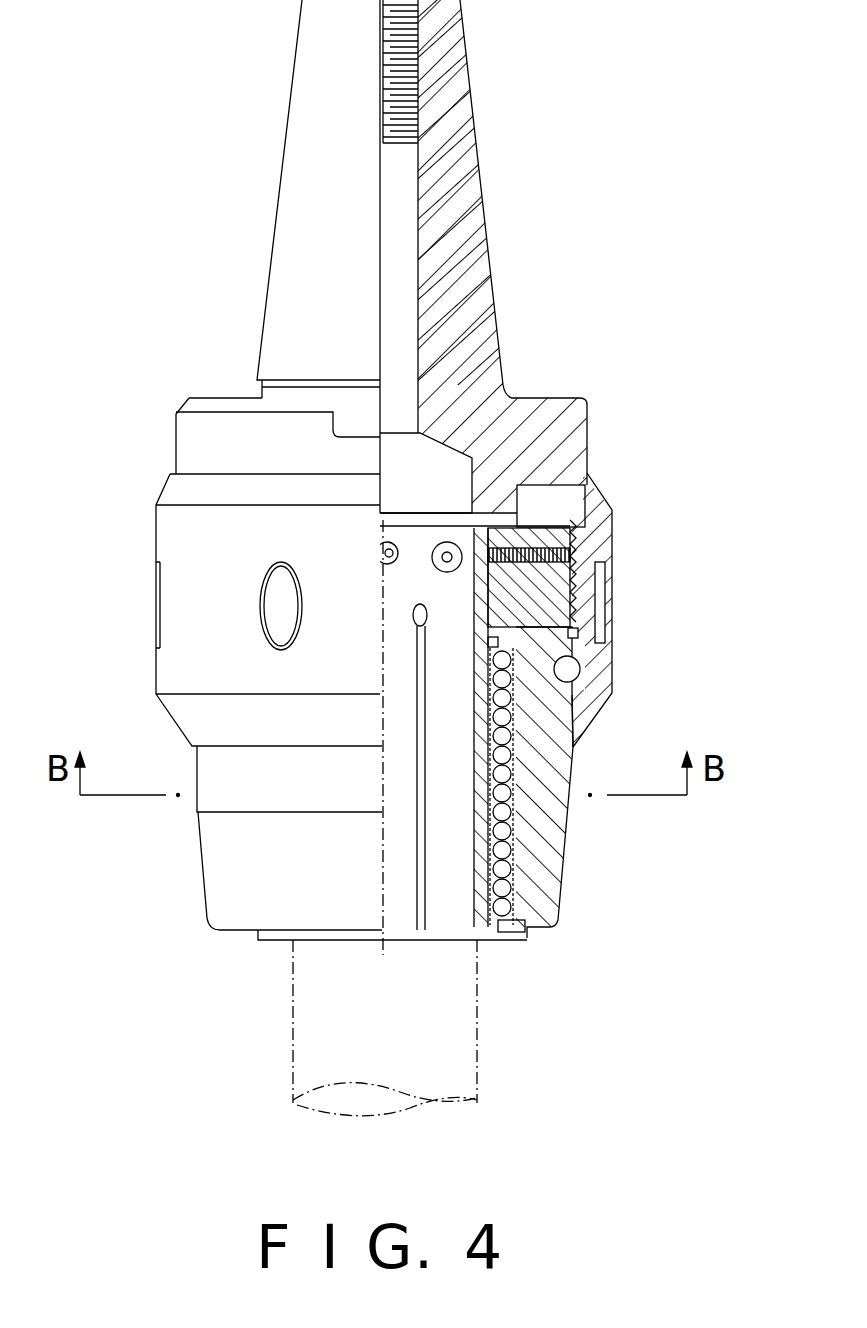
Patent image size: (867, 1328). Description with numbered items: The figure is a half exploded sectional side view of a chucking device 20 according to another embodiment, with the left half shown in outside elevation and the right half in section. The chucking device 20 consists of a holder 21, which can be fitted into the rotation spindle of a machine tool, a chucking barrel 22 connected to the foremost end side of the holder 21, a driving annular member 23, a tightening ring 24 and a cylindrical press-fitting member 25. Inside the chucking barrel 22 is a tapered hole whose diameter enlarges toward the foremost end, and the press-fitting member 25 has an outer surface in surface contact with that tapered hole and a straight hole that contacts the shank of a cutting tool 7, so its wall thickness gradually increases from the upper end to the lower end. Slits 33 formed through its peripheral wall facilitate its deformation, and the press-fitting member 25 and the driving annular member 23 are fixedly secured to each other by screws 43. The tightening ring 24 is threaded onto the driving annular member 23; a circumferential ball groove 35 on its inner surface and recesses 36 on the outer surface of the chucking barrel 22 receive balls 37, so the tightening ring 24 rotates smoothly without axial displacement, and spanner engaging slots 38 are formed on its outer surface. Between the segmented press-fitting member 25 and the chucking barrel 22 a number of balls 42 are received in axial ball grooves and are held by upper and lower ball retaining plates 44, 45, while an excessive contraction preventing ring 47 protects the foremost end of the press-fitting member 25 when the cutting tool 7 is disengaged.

The cutting tool 7 is at (325, 1018).
The chucking device 20 is at (211, 372).
The holder 21 is at (483, 183).
The chucking barrel 22 is at (570, 823).
The driving annular member 23 is at (563, 588).
The tightening ring 24 is at (613, 528).
The press-fitting member 25 is at (483, 877).
The slits 33 is at (410, 837).
The ball groove 35 is at (575, 692).
The recesses 36 is at (557, 684).
The balls 37 is at (273, 608).
The spanner engaging slot 38 is at (602, 610).
The balls 42 is at (510, 870).
The screws 43 is at (468, 540).
The upper ball retaining plate 44 is at (520, 933).
The lower ball retaining plate 45 is at (493, 647).
The excessive contraction preventing ring 47 is at (483, 943).